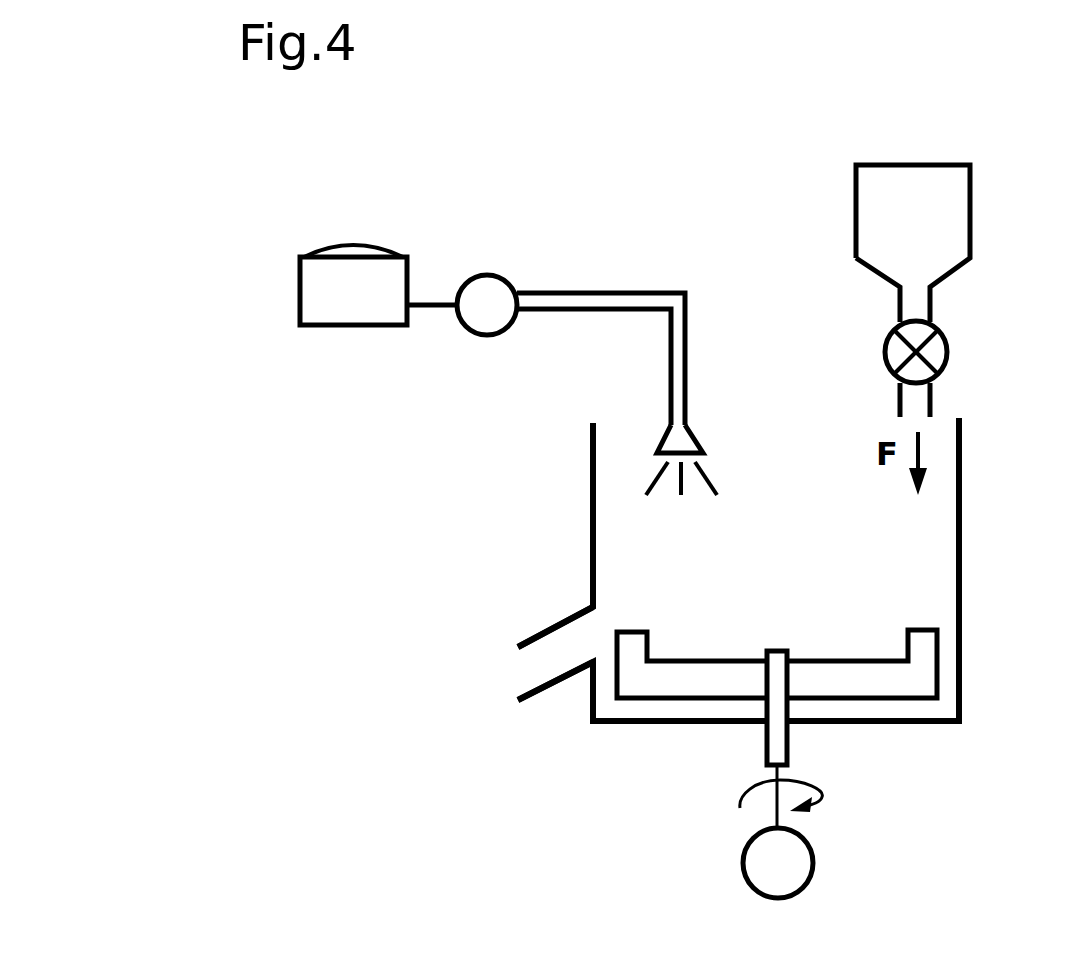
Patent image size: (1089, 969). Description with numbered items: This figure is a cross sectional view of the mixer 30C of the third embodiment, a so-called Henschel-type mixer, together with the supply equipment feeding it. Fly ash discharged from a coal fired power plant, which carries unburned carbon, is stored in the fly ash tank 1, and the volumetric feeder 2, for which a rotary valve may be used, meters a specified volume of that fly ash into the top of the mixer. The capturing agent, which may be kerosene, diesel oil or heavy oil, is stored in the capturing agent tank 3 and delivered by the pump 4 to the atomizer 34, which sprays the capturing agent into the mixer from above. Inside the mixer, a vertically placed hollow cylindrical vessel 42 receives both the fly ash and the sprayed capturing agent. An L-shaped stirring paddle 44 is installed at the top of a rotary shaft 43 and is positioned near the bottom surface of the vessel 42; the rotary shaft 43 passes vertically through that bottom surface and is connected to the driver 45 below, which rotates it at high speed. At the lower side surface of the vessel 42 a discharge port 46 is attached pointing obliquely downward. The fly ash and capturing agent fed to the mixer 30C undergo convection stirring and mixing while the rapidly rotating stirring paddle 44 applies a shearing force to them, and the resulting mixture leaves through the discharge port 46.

The mixer 30C is at (690, 160).
The fly ash tank 1 is at (972, 222).
The volumetric feeder 2 is at (952, 347).
The capturing agent tank 3 is at (383, 243).
The pump 4 is at (495, 272).
The atomizer 34 is at (663, 443).
The hollow cylindrical vessel 42 is at (593, 530).
The rotary shaft 43 is at (790, 747).
The stirring paddle 44 is at (939, 668).
The driver 45 is at (743, 863).
The discharge port 46 is at (538, 628).